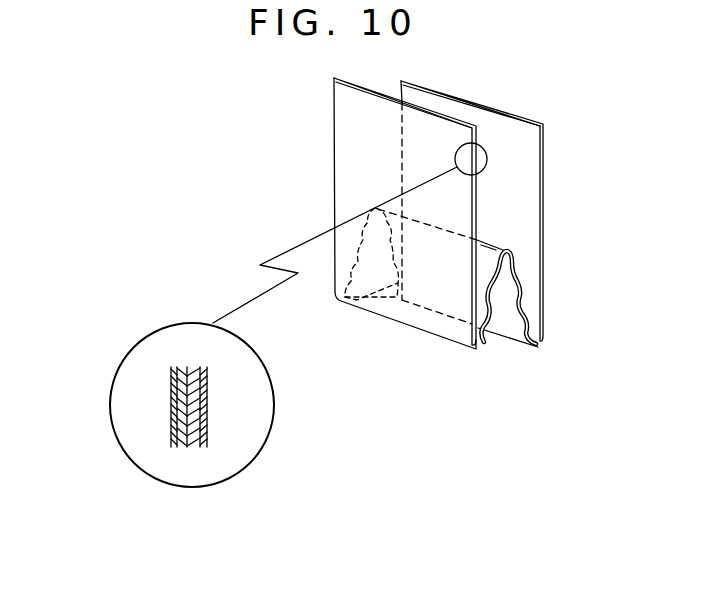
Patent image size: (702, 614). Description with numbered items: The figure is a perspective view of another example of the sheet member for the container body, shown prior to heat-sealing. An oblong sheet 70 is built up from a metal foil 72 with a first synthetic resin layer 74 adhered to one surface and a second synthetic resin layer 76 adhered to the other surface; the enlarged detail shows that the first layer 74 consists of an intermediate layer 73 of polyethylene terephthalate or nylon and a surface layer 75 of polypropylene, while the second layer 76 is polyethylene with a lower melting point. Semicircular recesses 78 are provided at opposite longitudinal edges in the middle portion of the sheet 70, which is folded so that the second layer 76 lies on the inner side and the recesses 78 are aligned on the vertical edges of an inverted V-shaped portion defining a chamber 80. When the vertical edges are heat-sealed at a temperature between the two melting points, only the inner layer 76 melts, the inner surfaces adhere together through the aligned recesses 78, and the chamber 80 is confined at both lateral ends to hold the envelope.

The oblong sheet 70 is at (457, 108).
The metal foil 72 is at (193, 445).
The intermediate layer 73 is at (177, 437).
The first synthetic resin layer 74 is at (62, 430).
The surface layer 75 is at (171, 403).
The second synthetic resin layer 76 is at (208, 420).
The recesses 78 is at (523, 340).
The chamber 80 is at (502, 304).